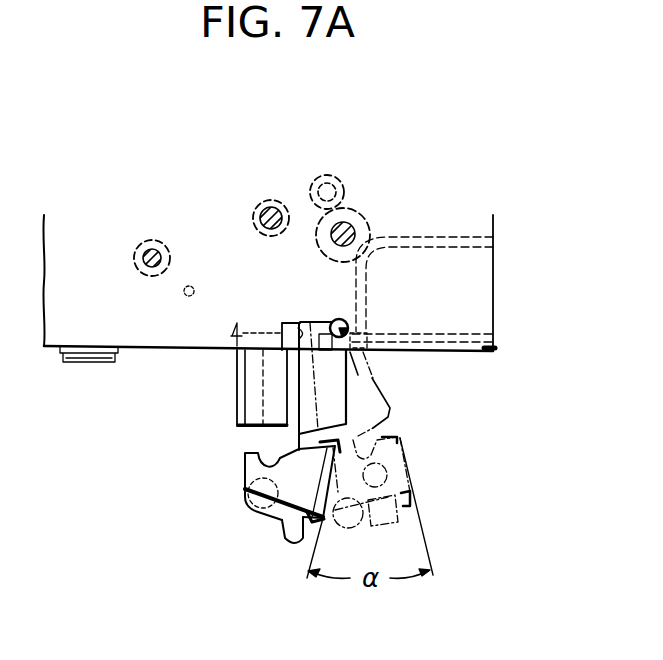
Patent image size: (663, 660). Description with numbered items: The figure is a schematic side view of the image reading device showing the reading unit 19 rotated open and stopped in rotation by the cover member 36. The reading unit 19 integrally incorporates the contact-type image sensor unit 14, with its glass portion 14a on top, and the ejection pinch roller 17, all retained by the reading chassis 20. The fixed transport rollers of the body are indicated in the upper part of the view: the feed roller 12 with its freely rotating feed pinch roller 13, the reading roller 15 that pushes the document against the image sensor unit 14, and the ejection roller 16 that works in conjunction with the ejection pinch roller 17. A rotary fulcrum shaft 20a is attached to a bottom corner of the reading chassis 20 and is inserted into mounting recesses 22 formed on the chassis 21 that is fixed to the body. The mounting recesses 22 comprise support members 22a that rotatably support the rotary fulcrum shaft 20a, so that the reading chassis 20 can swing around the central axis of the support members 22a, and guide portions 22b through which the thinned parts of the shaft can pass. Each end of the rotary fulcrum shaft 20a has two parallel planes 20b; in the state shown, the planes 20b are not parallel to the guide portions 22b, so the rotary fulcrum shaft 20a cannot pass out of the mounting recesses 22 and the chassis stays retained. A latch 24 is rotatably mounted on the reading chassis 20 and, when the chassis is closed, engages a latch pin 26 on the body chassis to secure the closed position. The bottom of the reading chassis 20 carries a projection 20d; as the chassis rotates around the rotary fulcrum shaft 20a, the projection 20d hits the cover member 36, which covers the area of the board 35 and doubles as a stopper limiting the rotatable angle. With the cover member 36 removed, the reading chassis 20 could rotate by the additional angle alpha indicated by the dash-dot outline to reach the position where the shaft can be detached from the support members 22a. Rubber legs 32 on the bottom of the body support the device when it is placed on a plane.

The feed roller 12 is at (358, 212).
The feed pinch roller 13 is at (334, 175).
The contact-type image sensor unit 14 is at (247, 400).
The glass portion 14a is at (234, 375).
The reading roller 15 is at (270, 200).
The ejection roller 16 is at (162, 240).
The ejection pinch roller 17 is at (243, 517).
The reading unit 19 is at (238, 508).
The reading chassis 20 is at (252, 447).
The rotary fulcrum shaft 20a is at (320, 321).
The parallel planes 20b is at (355, 322).
The projection 20d is at (366, 355).
The chassis 21 is at (144, 327).
The mounting recesses 22 is at (300, 322).
The support members 22a is at (340, 318).
The guide portions 22b is at (300, 322).
The latch 24 is at (243, 473).
The latch pin 26 is at (194, 285).
The rubber legs 32 is at (90, 363).
The board 35 is at (450, 333).
The cover member 36 is at (440, 354).